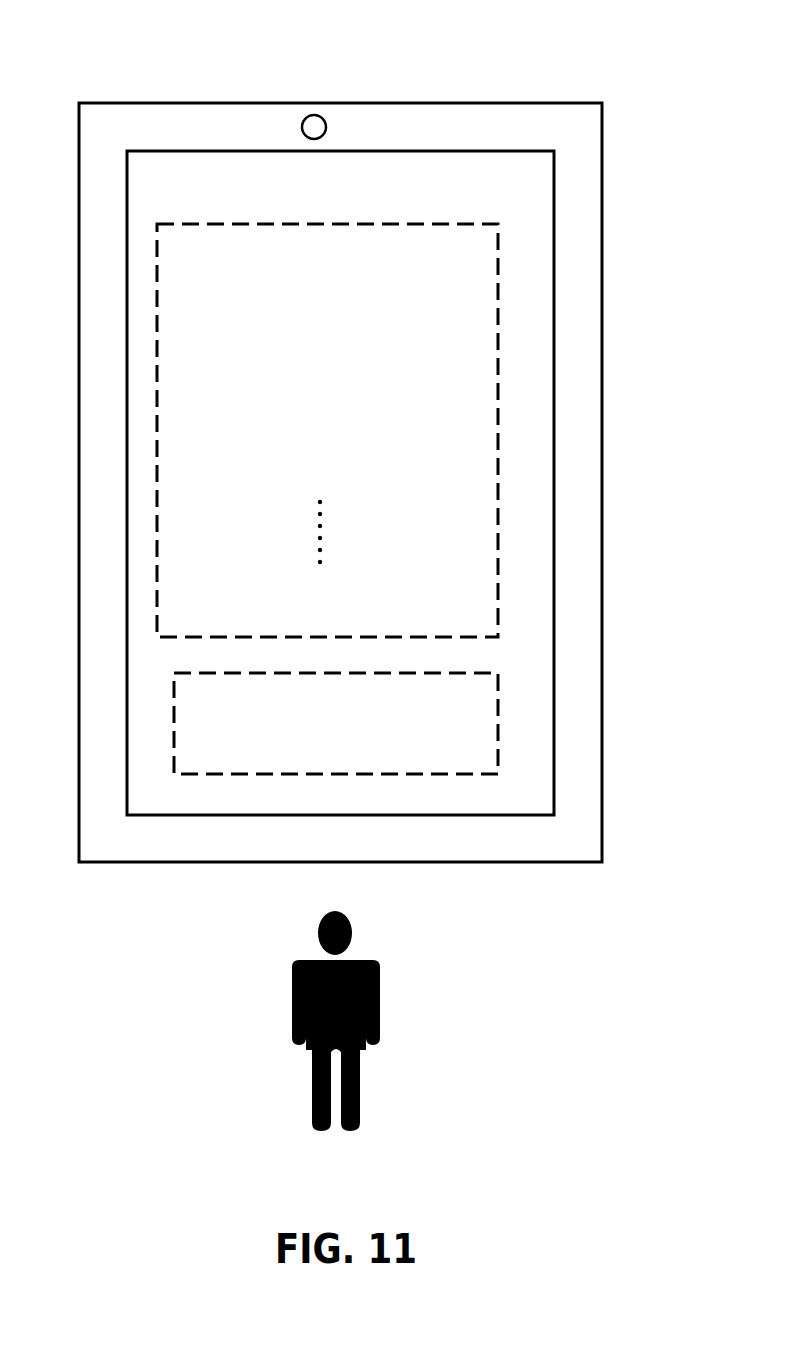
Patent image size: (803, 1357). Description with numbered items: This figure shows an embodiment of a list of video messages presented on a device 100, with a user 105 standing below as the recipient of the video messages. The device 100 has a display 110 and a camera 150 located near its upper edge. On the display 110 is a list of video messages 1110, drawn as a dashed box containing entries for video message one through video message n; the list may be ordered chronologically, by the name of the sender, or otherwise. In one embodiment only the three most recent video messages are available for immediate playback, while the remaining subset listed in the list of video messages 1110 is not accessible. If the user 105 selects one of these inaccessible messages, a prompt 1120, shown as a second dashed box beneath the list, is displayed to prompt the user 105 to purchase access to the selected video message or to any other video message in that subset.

The device 100 is at (458, 78).
The display 110 is at (217, 152).
The camera 150 is at (317, 124).
The list of video messages 1110 is at (498, 365).
The prompt 1120 is at (498, 737).
The user 105 is at (336, 1049).